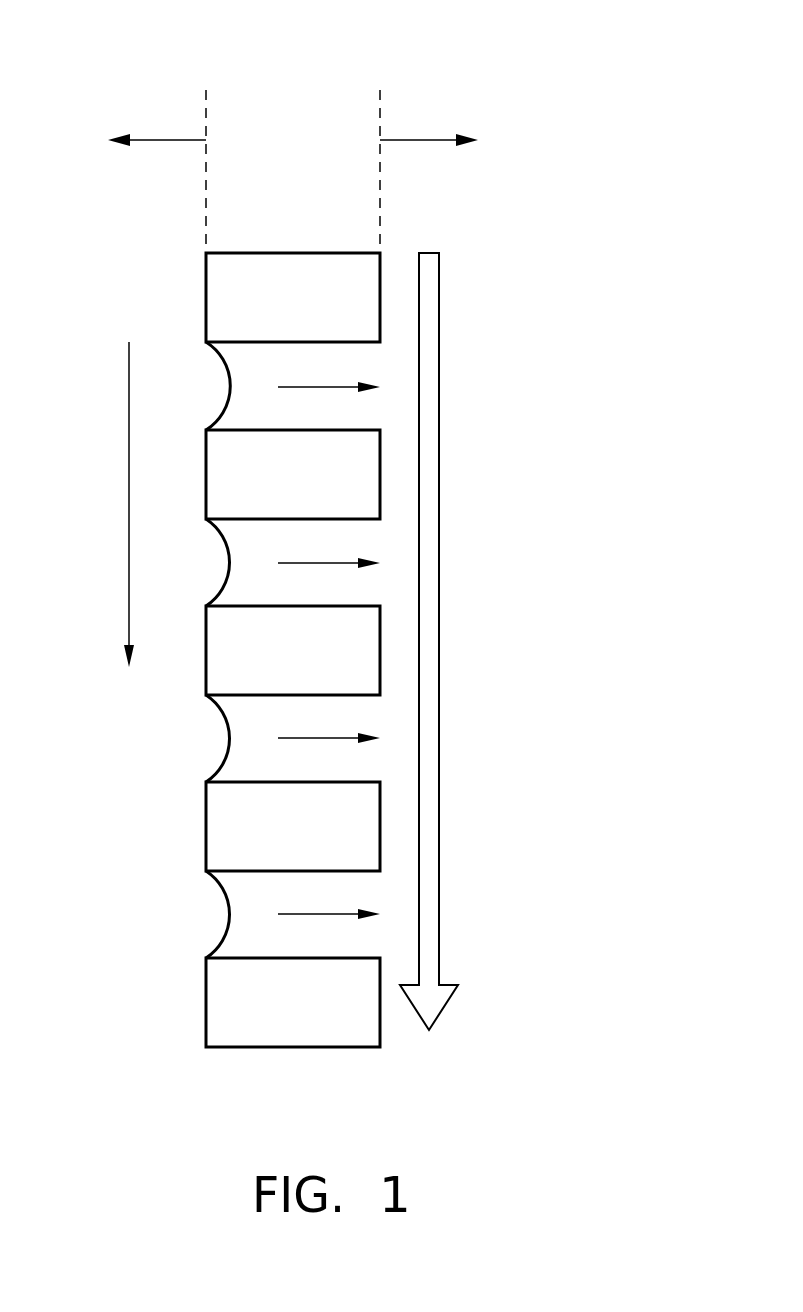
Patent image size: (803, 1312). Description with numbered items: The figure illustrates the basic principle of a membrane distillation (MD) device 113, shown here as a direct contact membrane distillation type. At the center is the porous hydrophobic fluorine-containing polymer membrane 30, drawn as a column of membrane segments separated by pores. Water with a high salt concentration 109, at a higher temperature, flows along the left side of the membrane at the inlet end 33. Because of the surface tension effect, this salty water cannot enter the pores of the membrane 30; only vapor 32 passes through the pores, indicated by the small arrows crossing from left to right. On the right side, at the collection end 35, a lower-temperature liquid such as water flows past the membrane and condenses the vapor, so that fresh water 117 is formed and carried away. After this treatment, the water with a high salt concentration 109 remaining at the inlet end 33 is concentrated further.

The porous hydrophobic fluorine-containing polymer membrane 30 is at (292, 252).
The vapor 32 is at (313, 738).
The inlet end 33 is at (157, 123).
The collection end 35 is at (429, 123).
The water with a high salt concentration 109 is at (128, 503).
The MD device 113 is at (568, 98).
The fresh water 117 is at (440, 620).